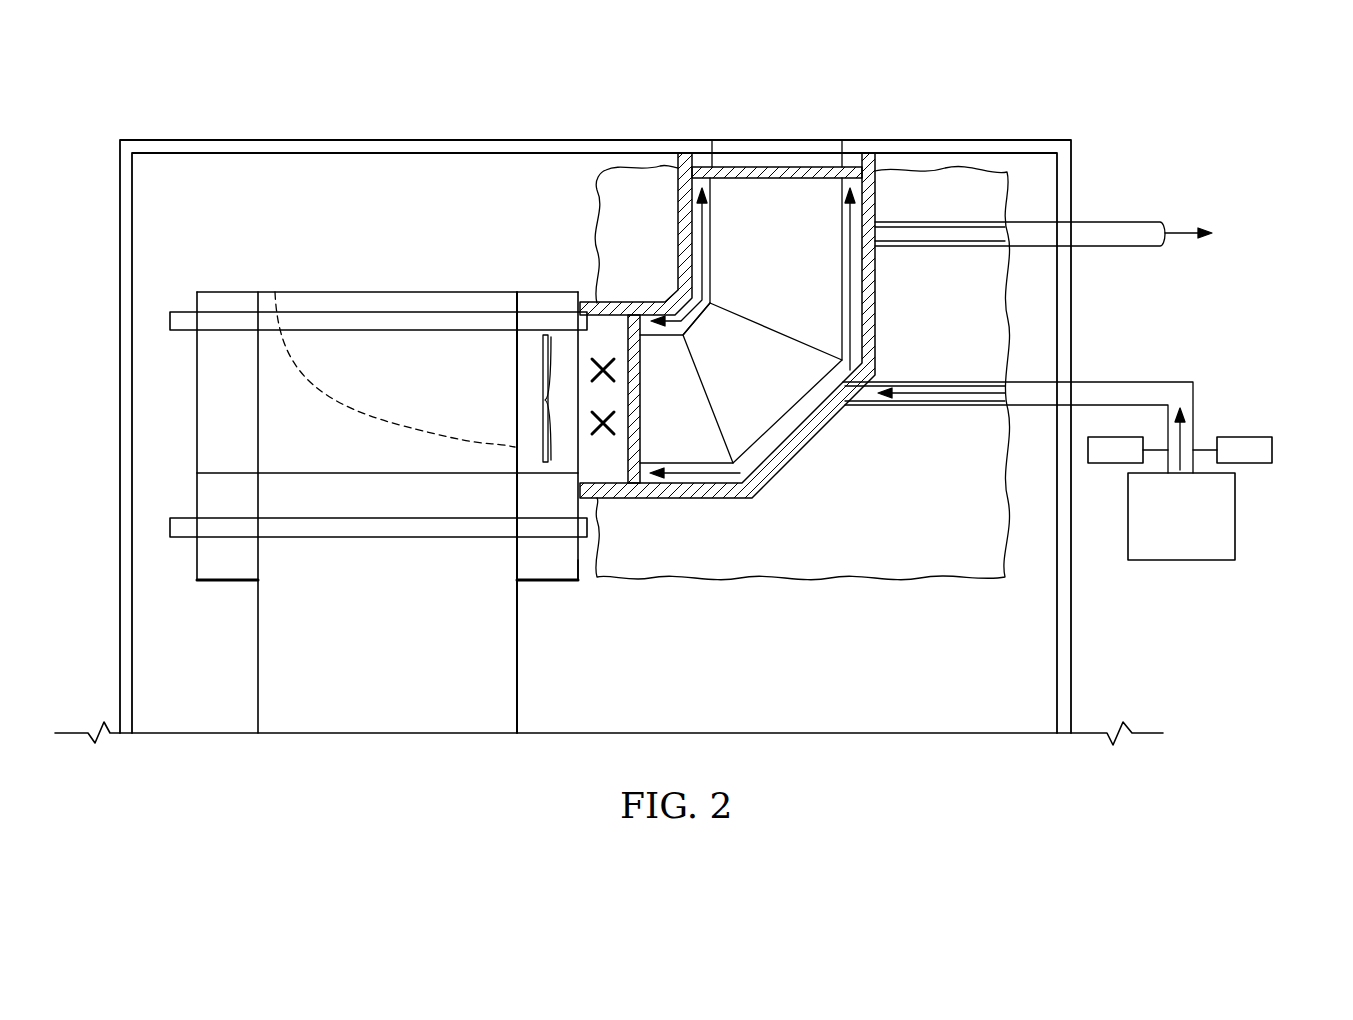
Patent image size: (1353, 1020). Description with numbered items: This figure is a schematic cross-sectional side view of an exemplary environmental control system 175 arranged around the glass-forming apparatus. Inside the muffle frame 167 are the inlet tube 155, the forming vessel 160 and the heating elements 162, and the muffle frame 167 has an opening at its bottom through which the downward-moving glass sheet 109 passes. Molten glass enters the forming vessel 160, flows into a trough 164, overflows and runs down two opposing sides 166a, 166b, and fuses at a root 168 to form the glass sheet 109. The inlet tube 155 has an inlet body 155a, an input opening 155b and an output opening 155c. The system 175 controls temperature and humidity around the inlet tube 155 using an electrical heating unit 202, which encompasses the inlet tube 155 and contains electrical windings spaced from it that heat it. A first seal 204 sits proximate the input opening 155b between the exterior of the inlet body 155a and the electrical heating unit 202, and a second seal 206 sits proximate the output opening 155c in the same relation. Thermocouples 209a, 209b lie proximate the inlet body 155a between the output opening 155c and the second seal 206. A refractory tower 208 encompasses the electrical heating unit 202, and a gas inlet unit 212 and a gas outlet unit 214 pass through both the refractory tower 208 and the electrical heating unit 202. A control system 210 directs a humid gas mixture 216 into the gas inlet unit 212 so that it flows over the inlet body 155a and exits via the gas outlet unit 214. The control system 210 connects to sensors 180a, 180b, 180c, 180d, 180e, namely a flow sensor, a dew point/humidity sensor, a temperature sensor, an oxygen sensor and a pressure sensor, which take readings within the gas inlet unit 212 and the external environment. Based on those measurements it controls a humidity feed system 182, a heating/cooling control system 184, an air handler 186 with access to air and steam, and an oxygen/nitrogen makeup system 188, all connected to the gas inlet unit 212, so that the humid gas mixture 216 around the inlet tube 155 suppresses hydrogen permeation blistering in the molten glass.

The glass sheet 109 is at (518, 660).
The inlet tube 155 is at (698, 320).
The inlet body 155a is at (800, 398).
The input opening 155b is at (842, 128).
The output opening 155c is at (542, 400).
The forming vessel 160 is at (406, 480).
The heating elements 162 is at (212, 333).
The trough 164 is at (340, 398).
The opposing side 166a is at (194, 562).
The opposing side 166b is at (588, 580).
The muffle frame 167 is at (176, 140).
The root 168 is at (548, 583).
The system 175 is at (1099, 599).
The flow sensor 180a is at (1261, 555).
The dew point/humidity sensor 180b is at (1261, 555).
The temperature sensor 180c is at (1261, 555).
The oxygen sensor 180d is at (1261, 555).
The pressure sensor 180e is at (1240, 463).
The humidity feed system 182 is at (1138, 572).
The heating/cooling control system 184 is at (1138, 572).
The air handler 186 is at (1138, 572).
The O2/N2 makeup system 188 is at (1100, 463).
The electrical heating unit 202 is at (677, 230).
The first seal 204 is at (775, 180).
The second seal 206 is at (641, 410).
The refractory tower 208 is at (596, 233).
The thermocouple 209a is at (608, 362).
The thermocouple 209b is at (608, 432).
The control system 210 is at (1180, 560).
The gas inlet unit 212 is at (1108, 382).
The gas outlet unit 214 is at (1107, 222).
The humid gas mixture 216 is at (697, 247).